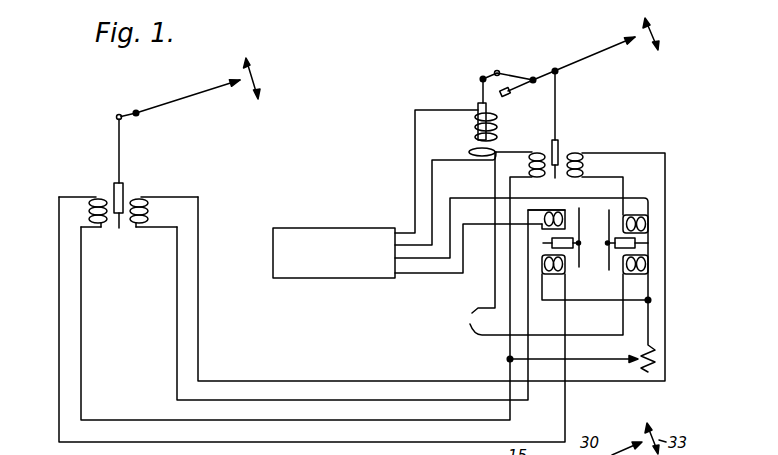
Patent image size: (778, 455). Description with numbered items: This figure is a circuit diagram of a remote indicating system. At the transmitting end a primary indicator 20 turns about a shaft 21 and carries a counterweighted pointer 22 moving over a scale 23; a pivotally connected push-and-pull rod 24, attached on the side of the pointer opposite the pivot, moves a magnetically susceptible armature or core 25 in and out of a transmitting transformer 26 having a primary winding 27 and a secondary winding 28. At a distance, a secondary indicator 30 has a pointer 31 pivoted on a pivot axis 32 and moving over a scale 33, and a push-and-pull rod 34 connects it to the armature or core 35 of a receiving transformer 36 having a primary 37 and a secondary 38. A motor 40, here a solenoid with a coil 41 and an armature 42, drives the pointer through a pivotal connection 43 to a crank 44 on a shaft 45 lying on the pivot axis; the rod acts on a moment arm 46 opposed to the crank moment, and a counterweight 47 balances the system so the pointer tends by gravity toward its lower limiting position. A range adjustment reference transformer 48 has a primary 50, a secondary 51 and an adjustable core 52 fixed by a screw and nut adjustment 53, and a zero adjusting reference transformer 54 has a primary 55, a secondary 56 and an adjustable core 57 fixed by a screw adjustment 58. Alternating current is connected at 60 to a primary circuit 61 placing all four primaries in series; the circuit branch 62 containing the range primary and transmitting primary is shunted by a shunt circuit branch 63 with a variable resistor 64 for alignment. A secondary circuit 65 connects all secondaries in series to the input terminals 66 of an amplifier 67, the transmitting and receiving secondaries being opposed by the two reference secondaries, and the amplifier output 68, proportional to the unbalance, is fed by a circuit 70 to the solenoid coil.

The primary indicator 20 is at (160, 104).
The shaft 21 is at (138, 115).
The pointer 22 is at (181, 96).
The scale 23 is at (266, 78).
The push-and-pull rod 24 is at (121, 153).
The armature or core 25 is at (120, 208).
The transmitting transformer 26 is at (111, 232).
The primary winding 27 is at (100, 199).
The secondary winding 28 is at (143, 208).
The secondary indicator 30 is at (581, 53).
The pointer 31 is at (578, 62).
The pivot axis 32 is at (524, 95).
The scale 33 is at (658, 35).
The push-and-pull rod 34 is at (557, 106).
The armature or core 35 is at (558, 150).
The receiving transformer 36 is at (537, 148).
The primary 37 is at (529, 165).
The secondary 38 is at (584, 171).
The motor 40 is at (471, 135).
The coil 41 is at (469, 152).
The armature 42 is at (488, 128).
The pivotal connection 43 is at (481, 78).
The crank 44 is at (490, 75).
The shaft 45 is at (498, 70).
The moment arm 46 is at (534, 77).
The counterweight 47 is at (509, 96).
The range adjustment reference transformer 48 is at (567, 237).
The primary 50 is at (553, 276).
The secondary 51 is at (560, 213).
The adjustable core 52 is at (557, 249).
The screw and nut adjustment 53 is at (583, 247).
The zero adjusting reference transformer 54 is at (646, 240).
The primary 55 is at (649, 268).
The secondary 56 is at (636, 215).
The adjustable core 57 is at (650, 243).
The screw adjustment 58 is at (608, 238).
The alternating current power source connection 60 is at (534, 243).
The primary circuit 61 is at (354, 422).
The circuit branch 62 is at (577, 301).
The shunt circuit branch 63 is at (587, 358).
The variable resistor 64 is at (657, 361).
The secondary circuit 65 is at (303, 400).
The input terminals 66 is at (424, 271).
The amplifier 67 is at (334, 253).
The output 68 is at (410, 230).
The circuit 70 is at (432, 176).